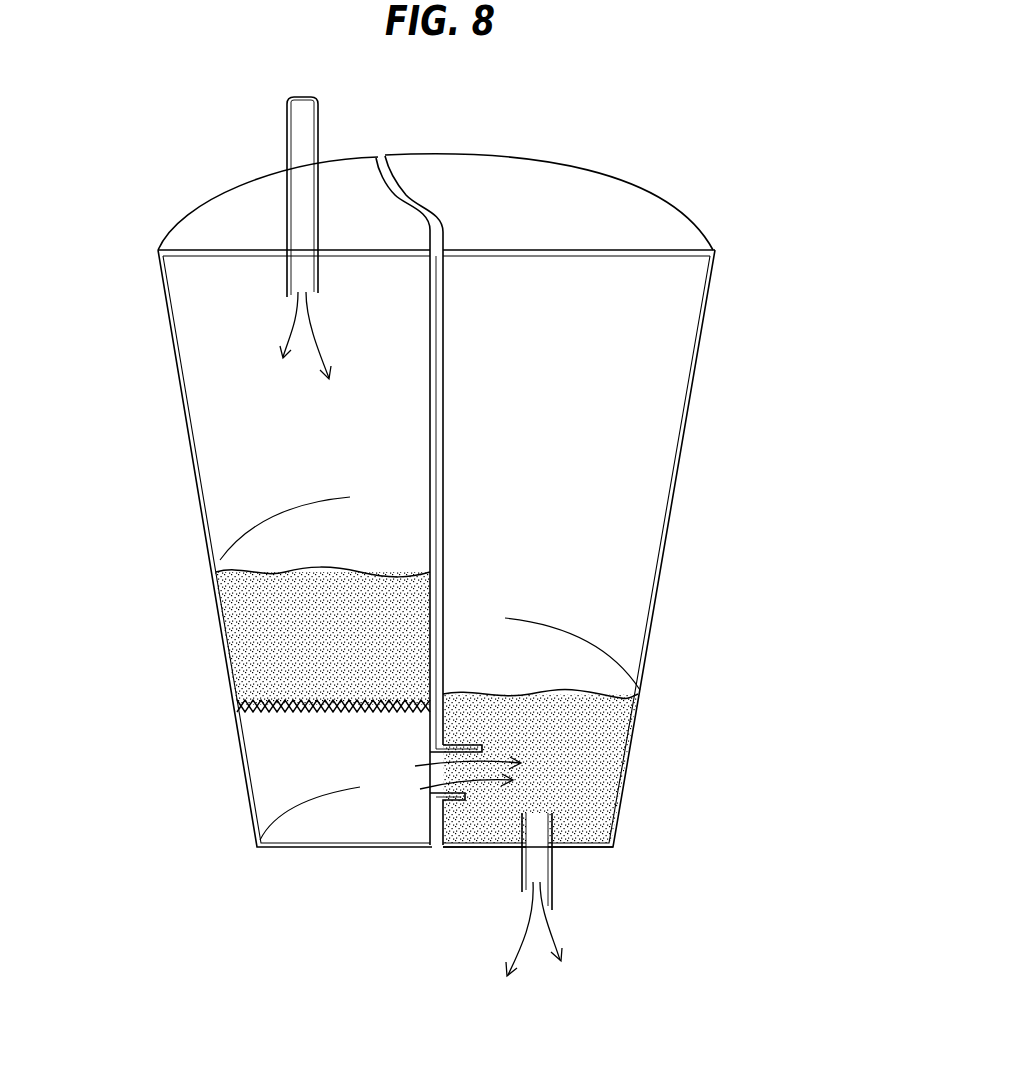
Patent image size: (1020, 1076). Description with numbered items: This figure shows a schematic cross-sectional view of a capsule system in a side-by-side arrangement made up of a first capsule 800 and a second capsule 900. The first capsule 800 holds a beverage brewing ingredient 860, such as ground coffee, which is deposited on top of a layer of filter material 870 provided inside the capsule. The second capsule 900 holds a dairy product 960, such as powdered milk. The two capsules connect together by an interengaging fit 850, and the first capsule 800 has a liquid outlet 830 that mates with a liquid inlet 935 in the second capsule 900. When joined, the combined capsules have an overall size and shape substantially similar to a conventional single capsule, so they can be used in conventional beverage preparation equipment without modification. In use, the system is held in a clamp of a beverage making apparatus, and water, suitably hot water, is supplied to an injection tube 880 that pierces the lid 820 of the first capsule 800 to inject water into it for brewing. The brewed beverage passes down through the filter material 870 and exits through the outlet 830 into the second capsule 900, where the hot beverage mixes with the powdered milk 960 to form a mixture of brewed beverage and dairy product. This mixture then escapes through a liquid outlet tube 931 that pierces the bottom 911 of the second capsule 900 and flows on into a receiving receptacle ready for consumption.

The first capsule 800 is at (197, 477).
The lid 820 is at (192, 228).
The liquid outlet 830 is at (478, 748).
The interengaging fit 850 is at (408, 193).
The beverage brewing ingredient 860 is at (255, 630).
The filter material 870 is at (285, 712).
The injection tube 880 is at (285, 128).
The second capsule 900 is at (675, 497).
The bottom 911 is at (470, 848).
The liquid outlet tube 931 is at (555, 905).
The liquid inlet 935 is at (440, 798).
The dairy product 960 is at (612, 748).